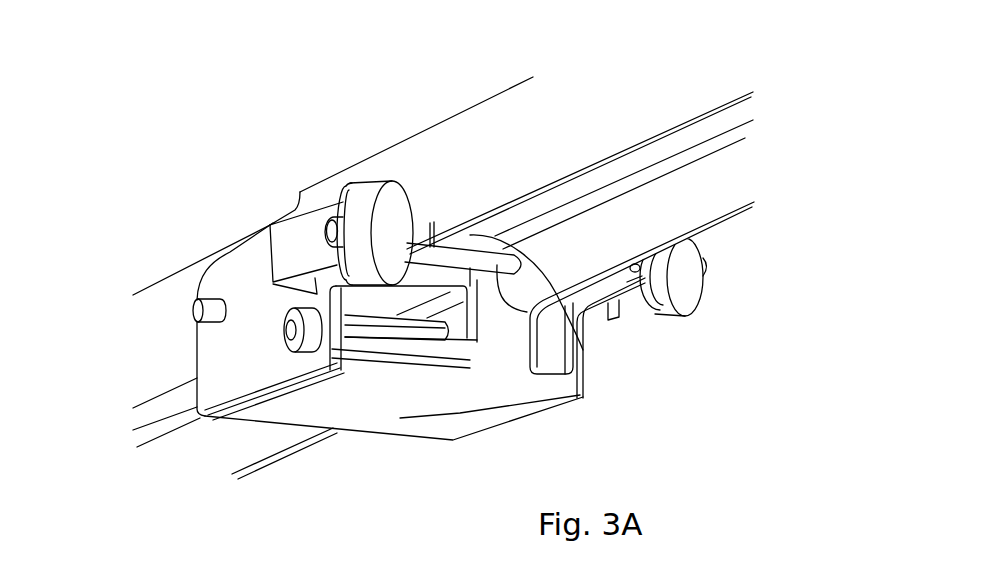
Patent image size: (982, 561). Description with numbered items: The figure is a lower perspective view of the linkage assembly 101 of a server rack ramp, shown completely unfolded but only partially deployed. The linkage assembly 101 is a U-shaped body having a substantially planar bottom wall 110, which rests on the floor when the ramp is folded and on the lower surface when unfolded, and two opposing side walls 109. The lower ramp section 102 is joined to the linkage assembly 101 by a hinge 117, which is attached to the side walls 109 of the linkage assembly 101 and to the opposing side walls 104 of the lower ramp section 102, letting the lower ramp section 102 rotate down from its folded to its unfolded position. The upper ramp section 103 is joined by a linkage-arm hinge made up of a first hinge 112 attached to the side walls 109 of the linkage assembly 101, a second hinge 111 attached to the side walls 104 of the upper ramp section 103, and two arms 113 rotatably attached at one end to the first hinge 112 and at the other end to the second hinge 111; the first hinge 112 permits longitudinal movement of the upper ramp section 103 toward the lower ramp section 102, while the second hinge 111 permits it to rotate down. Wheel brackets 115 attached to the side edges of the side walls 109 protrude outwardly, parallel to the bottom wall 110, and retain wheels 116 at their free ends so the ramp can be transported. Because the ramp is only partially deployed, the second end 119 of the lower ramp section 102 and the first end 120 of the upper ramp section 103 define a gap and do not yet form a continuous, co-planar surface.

The linkage assembly 101 is at (213, 185).
The lower ramp section 102 is at (155, 274).
The upper ramp section 103 is at (655, 90).
The opposing side walls 104 is at (449, 143).
The side walls 109 is at (218, 362).
The bottom wall 110 is at (467, 412).
The second hinge 111 is at (588, 344).
The first hinge 112 is at (370, 340).
The arms 113 is at (580, 398).
The wheel brackets 115 is at (298, 232).
The wheels 116 is at (367, 197).
The hinge 117 is at (197, 313).
The second end of the lower ramp section 119 is at (420, 275).
The first end of the upper ramp section 120 is at (585, 320).